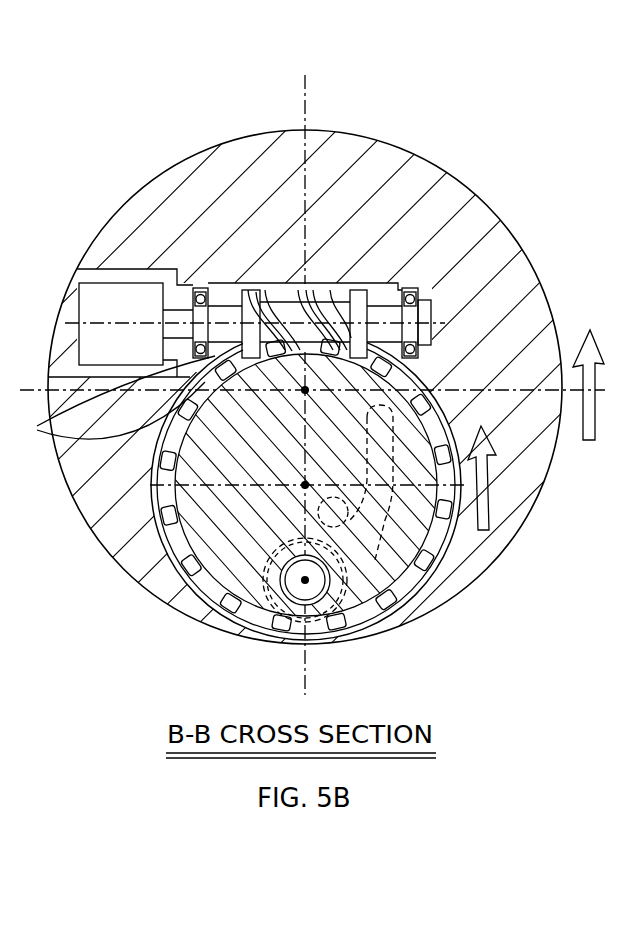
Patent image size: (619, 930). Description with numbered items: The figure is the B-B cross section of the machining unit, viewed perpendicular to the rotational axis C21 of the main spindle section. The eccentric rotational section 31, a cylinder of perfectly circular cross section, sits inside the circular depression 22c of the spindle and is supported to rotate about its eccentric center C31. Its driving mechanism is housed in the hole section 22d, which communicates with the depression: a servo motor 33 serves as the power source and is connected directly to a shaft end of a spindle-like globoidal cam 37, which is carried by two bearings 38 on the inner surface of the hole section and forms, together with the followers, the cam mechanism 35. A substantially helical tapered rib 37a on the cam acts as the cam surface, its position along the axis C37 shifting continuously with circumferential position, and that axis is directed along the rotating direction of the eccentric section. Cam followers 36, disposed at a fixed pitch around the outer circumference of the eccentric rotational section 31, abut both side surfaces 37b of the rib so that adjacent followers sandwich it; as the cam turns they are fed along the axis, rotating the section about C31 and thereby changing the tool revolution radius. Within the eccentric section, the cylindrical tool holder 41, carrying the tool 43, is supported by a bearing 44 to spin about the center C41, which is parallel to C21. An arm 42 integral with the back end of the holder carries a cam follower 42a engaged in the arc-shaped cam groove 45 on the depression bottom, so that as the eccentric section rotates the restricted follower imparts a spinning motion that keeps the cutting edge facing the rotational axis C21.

The hole section 22d is at (225, 285).
The servo motor 33 is at (88, 292).
The bearings 38 is at (200, 287).
The cam mechanism 35 is at (298, 290).
The globoidal cam 37 is at (306, 213).
The tapered rib 37a is at (281, 289).
The side surfaces 37b is at (243, 290).
The axis C37 is at (440, 316).
The cam followers 36 is at (109, 397).
The eccentric rotational section 31 is at (190, 580).
The circular depression 22c is at (178, 557).
The rotational axis C21 is at (293, 401).
The center C31 is at (289, 494).
The bearing 44 is at (300, 606).
The tool holder 41 is at (313, 620).
The tool 43 is at (305, 580).
The center C41 is at (310, 592).
The arm 42 is at (359, 535).
The cam follower 42a is at (363, 516).
The cam groove 45 is at (394, 413).